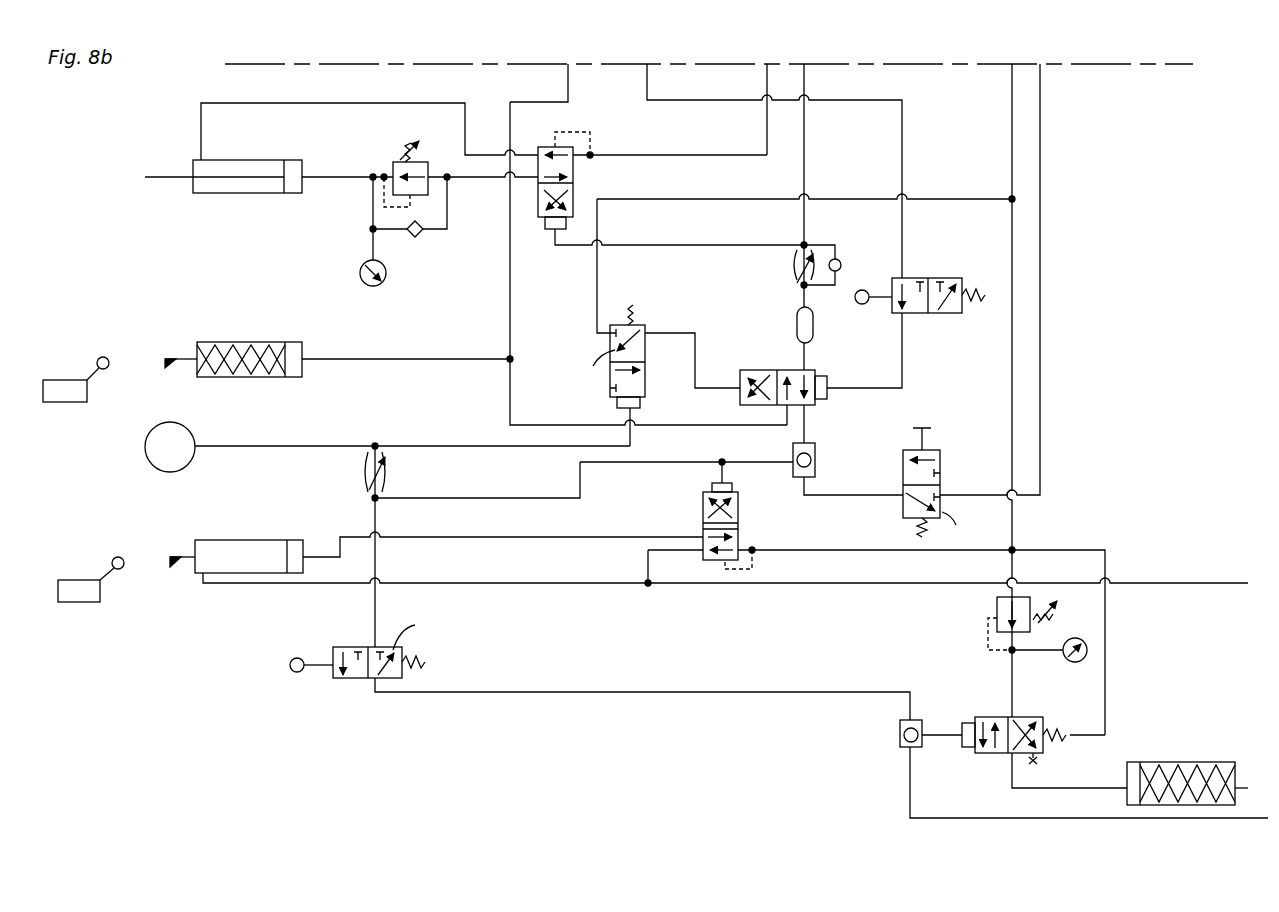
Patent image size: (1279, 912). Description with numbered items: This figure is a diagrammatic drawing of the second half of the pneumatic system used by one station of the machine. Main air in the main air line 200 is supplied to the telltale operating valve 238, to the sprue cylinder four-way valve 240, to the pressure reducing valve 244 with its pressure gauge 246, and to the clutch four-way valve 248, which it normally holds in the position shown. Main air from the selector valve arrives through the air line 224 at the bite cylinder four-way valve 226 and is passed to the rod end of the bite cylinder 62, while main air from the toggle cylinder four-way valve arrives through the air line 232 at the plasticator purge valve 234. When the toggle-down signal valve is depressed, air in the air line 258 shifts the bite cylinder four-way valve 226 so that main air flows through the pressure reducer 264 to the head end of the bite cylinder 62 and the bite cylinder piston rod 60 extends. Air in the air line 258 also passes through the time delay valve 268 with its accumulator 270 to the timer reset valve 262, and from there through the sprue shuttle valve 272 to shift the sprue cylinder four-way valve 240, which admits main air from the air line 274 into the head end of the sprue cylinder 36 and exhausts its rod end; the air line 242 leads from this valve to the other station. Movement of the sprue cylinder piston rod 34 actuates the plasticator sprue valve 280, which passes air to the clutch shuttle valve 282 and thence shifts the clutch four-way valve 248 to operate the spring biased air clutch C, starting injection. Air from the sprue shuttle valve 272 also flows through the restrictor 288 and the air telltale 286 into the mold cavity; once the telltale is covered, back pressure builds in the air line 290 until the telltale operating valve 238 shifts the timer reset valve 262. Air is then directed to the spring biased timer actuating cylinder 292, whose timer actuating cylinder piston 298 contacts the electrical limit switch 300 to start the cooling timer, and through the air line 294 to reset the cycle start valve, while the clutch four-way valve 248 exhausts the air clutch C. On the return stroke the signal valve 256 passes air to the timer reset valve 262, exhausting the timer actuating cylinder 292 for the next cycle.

The bite cylinder piston rod 60 is at (164, 177).
The bite cylinder 62 is at (262, 193).
The pressure reducer 264 is at (449, 213).
The air line 294 is at (566, 70).
The bite cylinder four-way valve 226 is at (577, 168).
The air line 224 is at (769, 96).
The air line 258 is at (808, 86).
The main air line 200 is at (1012, 129).
The air line 232 is at (1042, 105).
The time delay valve 268 is at (800, 268).
The signal valve 256 is at (920, 313).
The accumulator 270 is at (797, 333).
The telltale operating valve 238 is at (666, 322).
The timer reset valve 262 is at (752, 405).
The sprue shuttle valve 272 is at (816, 472).
The plasticator purge valve 234 is at (940, 481).
The timer actuating cylinder piston 298 is at (178, 352).
The timer actuating cylinder 292 is at (262, 342).
The electrical limit switch 300 is at (55, 402).
The air telltale 286 is at (184, 438).
The restrictor 288 is at (367, 470).
The air line 290 is at (430, 448).
The sprue cylinder piston rod 34 is at (188, 557).
The sprue cylinder 36 is at (225, 540).
The plasticator sprue valve 280 is at (62, 602).
The sprue cylinder four-way valve 240 is at (740, 537).
The air line 274 is at (822, 535).
The air line 242 is at (738, 583).
The pressure reducing valve 244 is at (1000, 597).
The pressure gauge 246 is at (1065, 662).
The clutch four-way valve 248 is at (1030, 718).
The clutch shuttle valve 282 is at (900, 727).
The air clutch C is at (1195, 762).